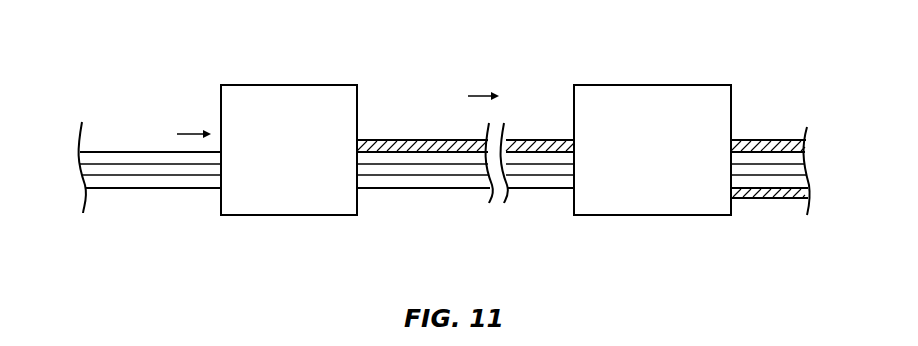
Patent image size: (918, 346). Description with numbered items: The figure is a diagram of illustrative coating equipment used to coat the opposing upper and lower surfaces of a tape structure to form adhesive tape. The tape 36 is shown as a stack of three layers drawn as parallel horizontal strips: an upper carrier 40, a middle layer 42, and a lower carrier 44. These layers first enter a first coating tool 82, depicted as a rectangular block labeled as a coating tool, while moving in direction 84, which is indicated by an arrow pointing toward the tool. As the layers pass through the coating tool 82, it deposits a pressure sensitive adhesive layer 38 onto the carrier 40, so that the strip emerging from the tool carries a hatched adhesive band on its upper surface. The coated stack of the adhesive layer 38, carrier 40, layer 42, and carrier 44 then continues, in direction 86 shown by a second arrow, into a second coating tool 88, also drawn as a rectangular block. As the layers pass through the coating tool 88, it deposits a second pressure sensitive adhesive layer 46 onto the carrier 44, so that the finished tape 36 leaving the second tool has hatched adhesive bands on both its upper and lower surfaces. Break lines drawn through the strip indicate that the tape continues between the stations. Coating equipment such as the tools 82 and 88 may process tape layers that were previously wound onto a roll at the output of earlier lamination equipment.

The tape 36 is at (803, 101).
The pressure sensitive adhesive layer 38 is at (418, 139).
The carrier 40 is at (120, 157).
The layer 42 is at (88, 170).
The carrier 44 is at (108, 181).
The pressure sensitive adhesive layer 46 is at (750, 199).
The coating tool 82 is at (287, 92).
The direction 84 is at (190, 131).
The direction 86 is at (482, 92).
The coating tool 88 is at (652, 92).